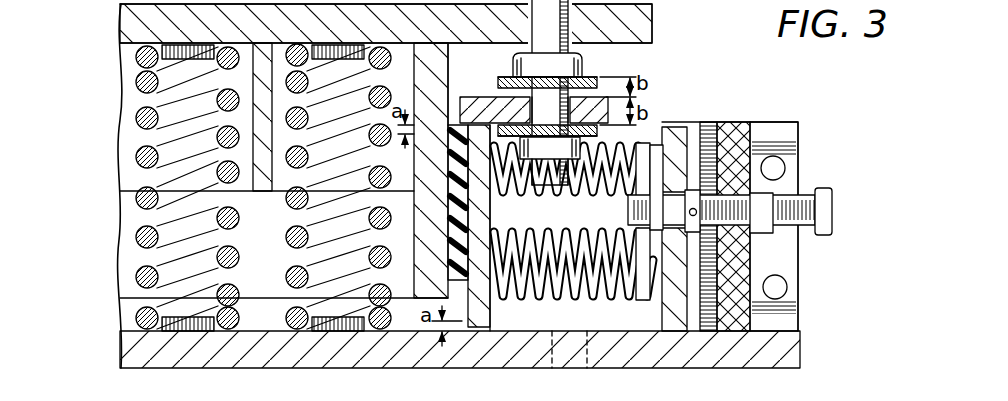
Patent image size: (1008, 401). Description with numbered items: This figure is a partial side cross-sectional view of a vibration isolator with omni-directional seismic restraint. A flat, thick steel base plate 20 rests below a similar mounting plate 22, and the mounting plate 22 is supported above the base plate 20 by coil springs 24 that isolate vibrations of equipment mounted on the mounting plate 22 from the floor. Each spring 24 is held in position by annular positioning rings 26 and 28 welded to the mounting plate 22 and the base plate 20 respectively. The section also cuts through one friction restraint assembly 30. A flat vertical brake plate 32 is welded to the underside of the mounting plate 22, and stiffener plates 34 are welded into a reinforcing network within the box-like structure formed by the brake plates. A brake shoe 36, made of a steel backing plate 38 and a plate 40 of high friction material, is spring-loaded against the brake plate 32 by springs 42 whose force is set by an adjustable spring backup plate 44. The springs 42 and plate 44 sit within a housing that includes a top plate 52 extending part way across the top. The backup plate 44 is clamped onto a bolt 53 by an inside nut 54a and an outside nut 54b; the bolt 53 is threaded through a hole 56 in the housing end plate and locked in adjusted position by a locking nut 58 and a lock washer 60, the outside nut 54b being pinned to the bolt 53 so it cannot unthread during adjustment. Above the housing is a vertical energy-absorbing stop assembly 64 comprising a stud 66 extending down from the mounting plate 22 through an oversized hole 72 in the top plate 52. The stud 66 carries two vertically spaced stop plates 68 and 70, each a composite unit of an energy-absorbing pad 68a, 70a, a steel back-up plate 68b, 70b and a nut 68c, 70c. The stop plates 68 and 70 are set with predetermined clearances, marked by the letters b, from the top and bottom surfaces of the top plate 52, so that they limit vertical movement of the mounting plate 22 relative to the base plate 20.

The base plate 20 is at (119, 350).
The mounting plate 22 is at (119, 22).
The coil springs 24 is at (298, 282).
The positioning ring 26 is at (312, 45).
The positioning ring 28 is at (310, 332).
The friction restraint assembly 30 is at (725, 119).
The brake plate 32 is at (432, 62).
The stiffener plate 34 is at (260, 192).
The brake shoe 36 is at (494, 222).
The backing plate 38 is at (488, 300).
The plate of high friction material 40 is at (455, 283).
The brake shoe springs 42 is at (610, 285).
The spring backup plate 44 is at (703, 175).
The top plate 52 is at (467, 97).
The bolt 53 is at (826, 214).
The inside nut 54a is at (660, 278).
The outside nut 54b is at (742, 172).
The threaded hole 56 is at (754, 158).
The locking nut 58 is at (772, 233).
The lock washer 60 is at (768, 173).
The vertical energy-absorbing stop assembly 64 is at (571, 22).
The stud 66 is at (533, 18).
The stop plate 68 is at (592, 66).
The energy-absorbing pad 68a is at (500, 78).
The steel back-up plate 68b is at (600, 83).
The nut 68c is at (549, 60).
The stop plate 70 is at (628, 189).
The energy-absorbing pad 70a is at (655, 147).
The steel back-up plate 70b is at (554, 110).
The nut 70c is at (564, 186).
The oversized hole 72 is at (530, 108).